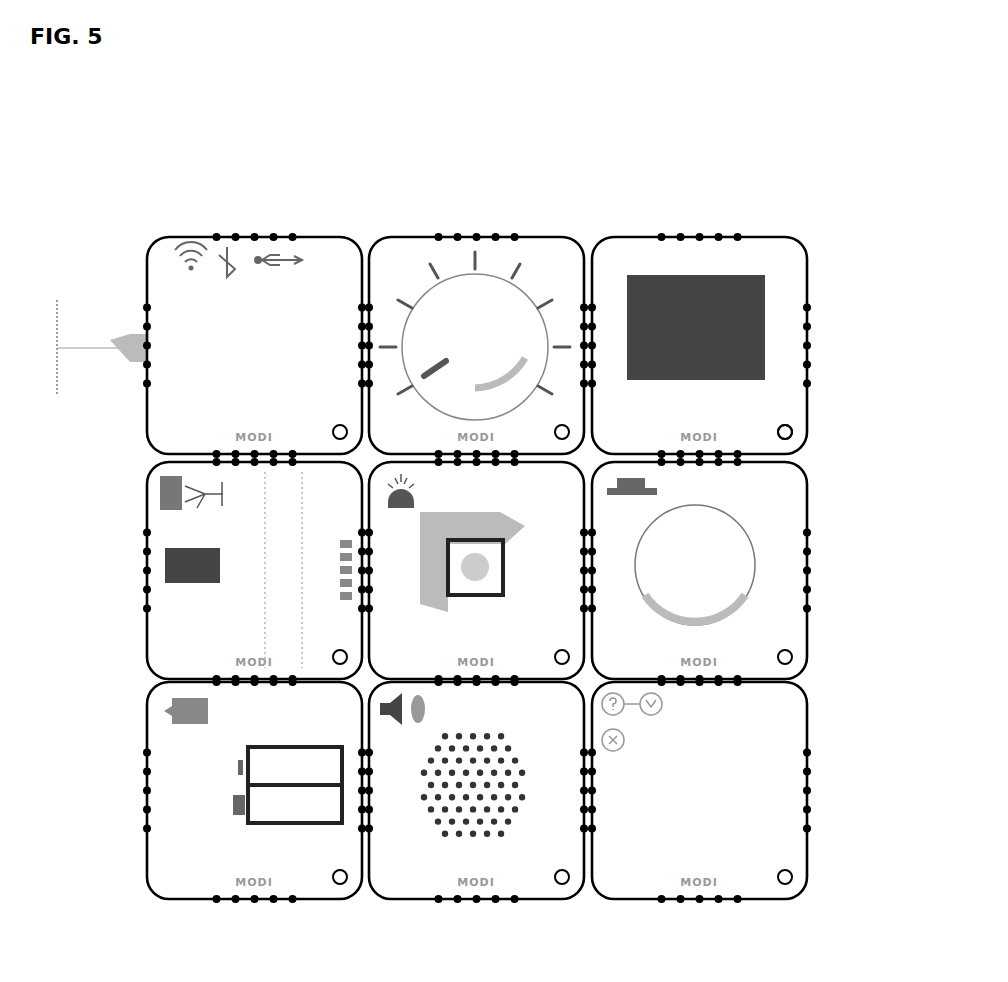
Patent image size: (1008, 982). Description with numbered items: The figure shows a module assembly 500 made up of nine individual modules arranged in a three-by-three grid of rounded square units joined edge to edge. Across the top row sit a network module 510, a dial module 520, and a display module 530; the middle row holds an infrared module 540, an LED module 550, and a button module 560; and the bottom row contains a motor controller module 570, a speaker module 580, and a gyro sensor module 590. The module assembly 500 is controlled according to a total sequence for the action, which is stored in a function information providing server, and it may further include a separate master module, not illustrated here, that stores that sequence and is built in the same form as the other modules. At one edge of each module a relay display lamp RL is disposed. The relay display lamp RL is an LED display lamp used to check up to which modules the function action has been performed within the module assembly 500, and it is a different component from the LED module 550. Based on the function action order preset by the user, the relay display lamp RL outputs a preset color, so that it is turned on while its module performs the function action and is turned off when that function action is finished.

The module assembly 500 is at (452, 136).
The network module 510 is at (306, 234).
The dial module 520 is at (525, 234).
The display module 530 is at (736, 314).
The infrared module 540 is at (143, 521).
The LED module 550 is at (556, 477).
The button module 560 is at (812, 518).
The motor controller module 570 is at (308, 902).
The speaker module 580 is at (528, 902).
The gyro sensor module 590 is at (750, 902).
The relay display lamp RL is at (793, 432).